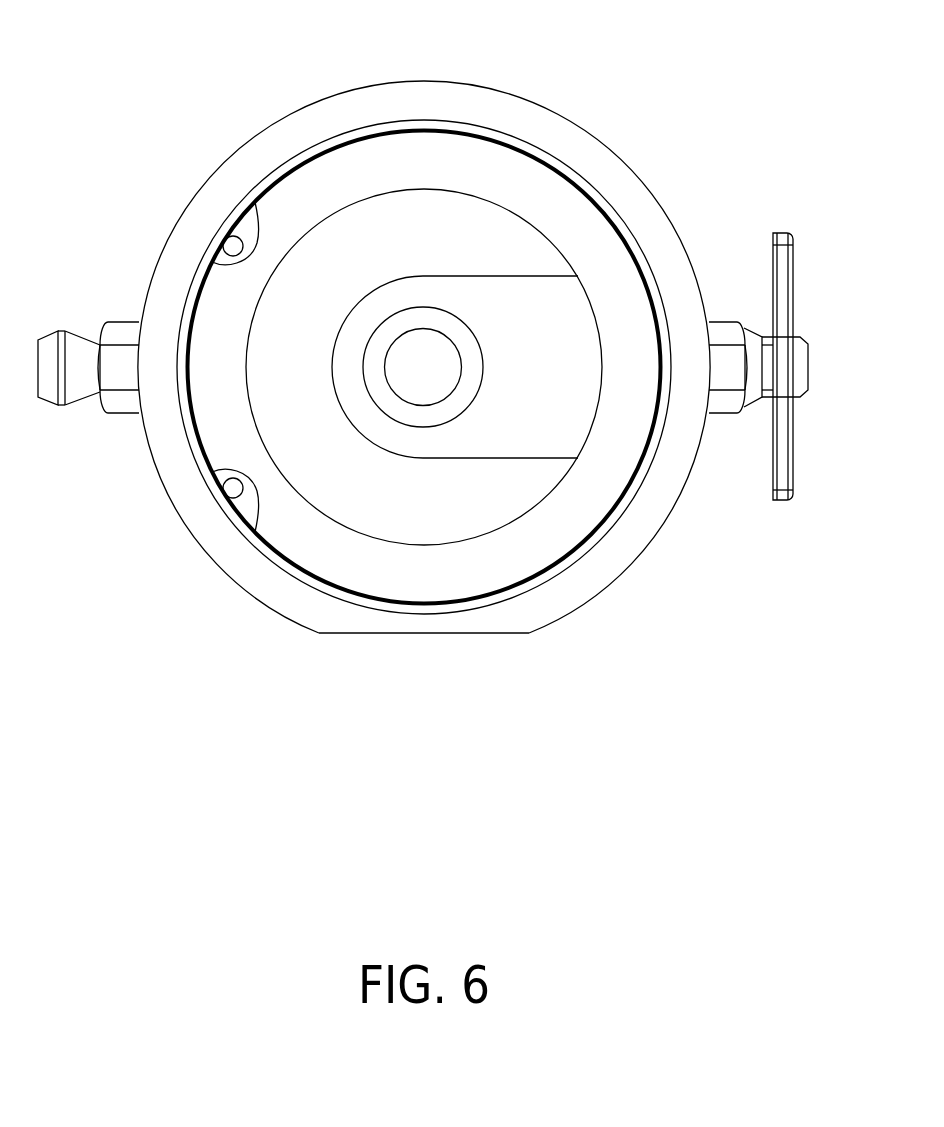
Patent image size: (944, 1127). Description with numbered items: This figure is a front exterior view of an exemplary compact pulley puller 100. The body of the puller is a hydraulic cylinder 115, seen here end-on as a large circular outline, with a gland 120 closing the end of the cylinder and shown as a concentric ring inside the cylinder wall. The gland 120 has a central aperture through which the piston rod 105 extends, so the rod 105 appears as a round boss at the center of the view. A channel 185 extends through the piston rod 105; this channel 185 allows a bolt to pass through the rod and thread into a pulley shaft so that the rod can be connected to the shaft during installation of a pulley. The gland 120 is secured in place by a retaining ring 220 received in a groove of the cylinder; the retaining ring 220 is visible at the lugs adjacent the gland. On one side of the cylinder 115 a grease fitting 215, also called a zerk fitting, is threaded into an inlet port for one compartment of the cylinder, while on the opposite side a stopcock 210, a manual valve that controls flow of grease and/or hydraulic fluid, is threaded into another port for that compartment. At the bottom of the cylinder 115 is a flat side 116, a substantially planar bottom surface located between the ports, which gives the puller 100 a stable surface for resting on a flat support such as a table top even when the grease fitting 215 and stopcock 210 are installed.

The puller 100 is at (292, 645).
The piston rod 105 is at (457, 325).
The hydraulic cylinder 115 is at (415, 81).
The flat side 116 is at (435, 633).
The gland 120 is at (460, 234).
The channel 185 is at (428, 382).
The stopcock 210 is at (745, 323).
The grease fitting 215 is at (90, 337).
The retaining ring 220 is at (247, 507).